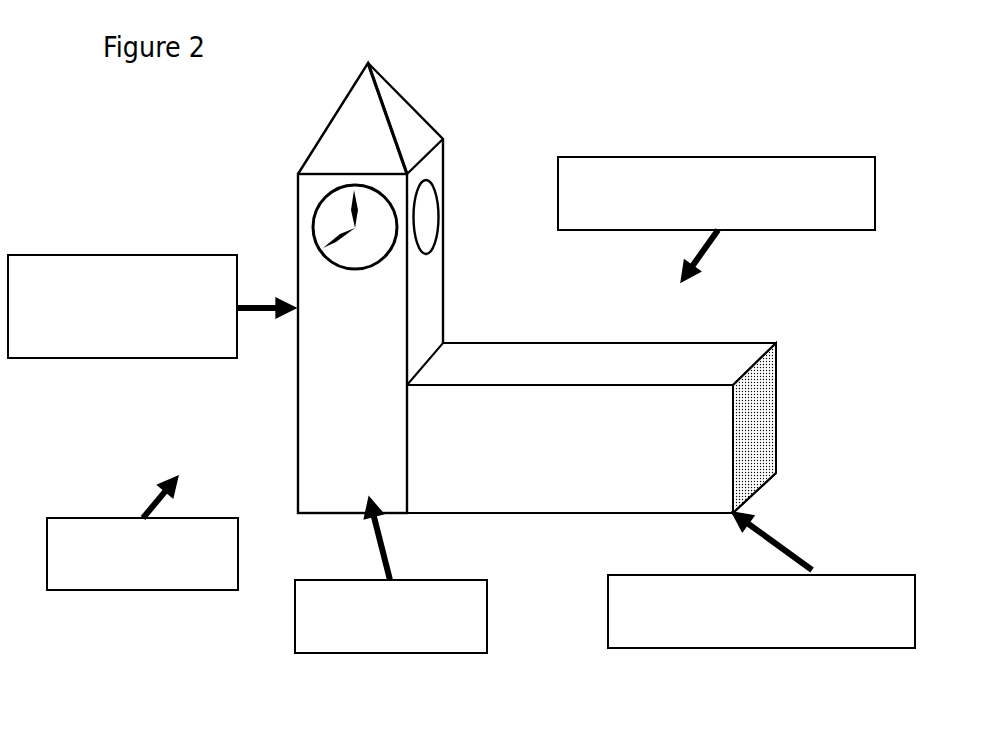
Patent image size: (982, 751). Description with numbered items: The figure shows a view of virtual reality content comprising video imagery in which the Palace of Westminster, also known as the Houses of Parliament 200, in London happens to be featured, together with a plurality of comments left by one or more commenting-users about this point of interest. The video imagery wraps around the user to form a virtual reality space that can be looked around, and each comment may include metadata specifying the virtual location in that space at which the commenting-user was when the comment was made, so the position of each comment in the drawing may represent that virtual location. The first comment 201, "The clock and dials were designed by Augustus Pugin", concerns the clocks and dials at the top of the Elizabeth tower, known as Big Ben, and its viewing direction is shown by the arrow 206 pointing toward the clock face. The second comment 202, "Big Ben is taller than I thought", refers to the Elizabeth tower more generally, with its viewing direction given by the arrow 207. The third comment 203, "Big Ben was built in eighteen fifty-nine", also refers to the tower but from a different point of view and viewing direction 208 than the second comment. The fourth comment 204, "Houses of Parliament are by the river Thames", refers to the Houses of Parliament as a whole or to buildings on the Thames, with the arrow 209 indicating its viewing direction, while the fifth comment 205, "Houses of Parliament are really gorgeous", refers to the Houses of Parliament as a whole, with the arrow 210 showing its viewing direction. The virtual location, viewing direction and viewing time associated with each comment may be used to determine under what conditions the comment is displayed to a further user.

The Houses of Parliament 200 is at (511, 143).
The first comment 201 is at (120, 255).
The second comment 202 is at (80, 518).
The third comment 203 is at (407, 653).
The fourth comment 204 is at (782, 649).
The fifth comment 205 is at (617, 232).
The arrow 206 is at (262, 302).
The arrow 207 is at (152, 502).
The viewing direction 208 is at (388, 553).
The arrow 209 is at (785, 540).
The arrow 210 is at (713, 245).